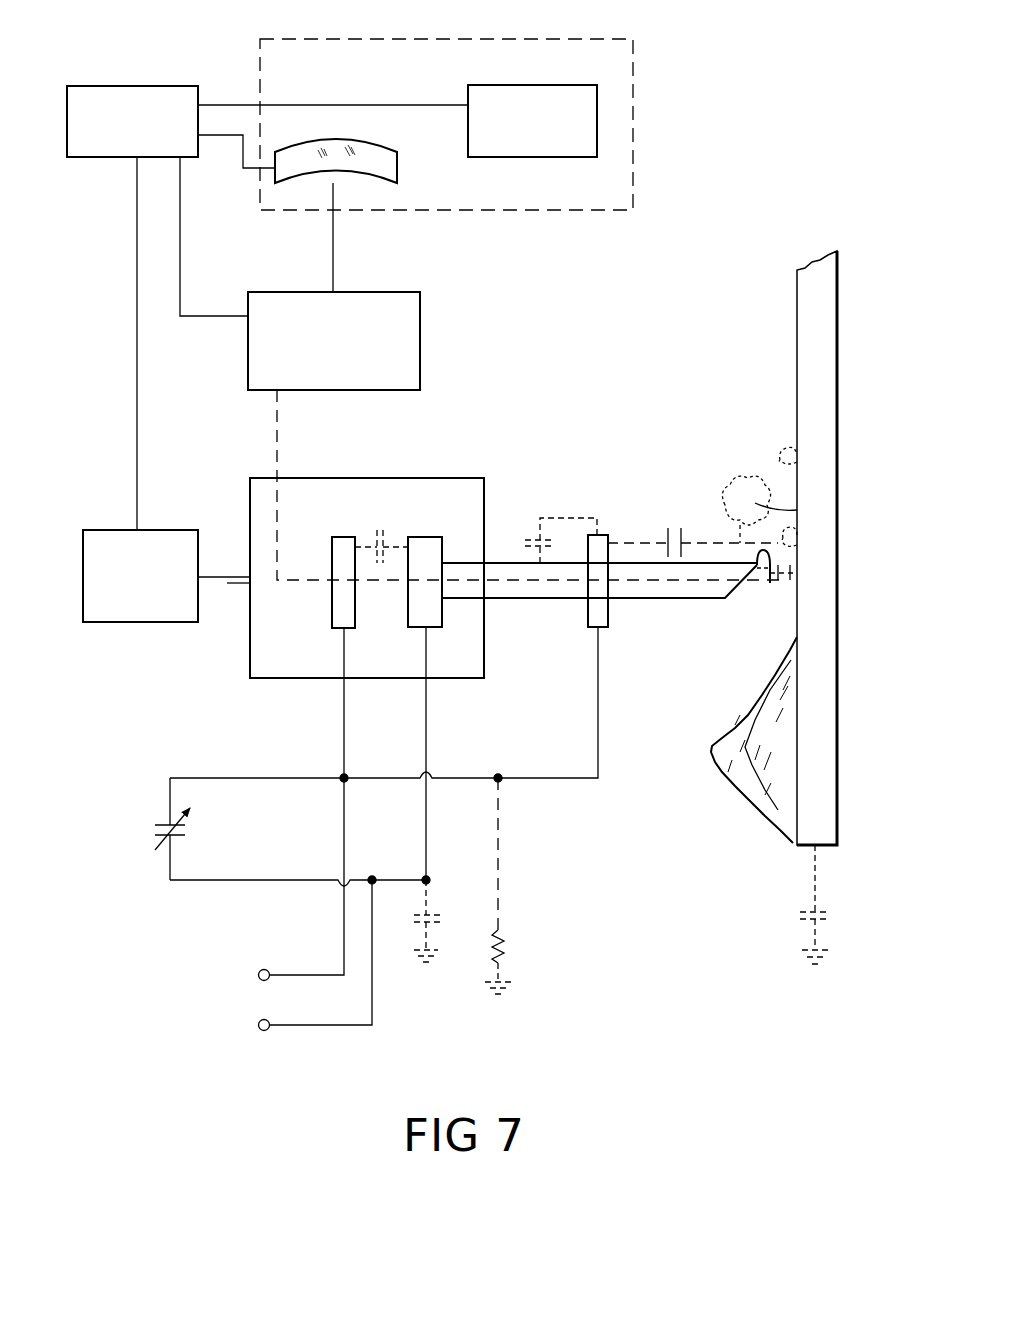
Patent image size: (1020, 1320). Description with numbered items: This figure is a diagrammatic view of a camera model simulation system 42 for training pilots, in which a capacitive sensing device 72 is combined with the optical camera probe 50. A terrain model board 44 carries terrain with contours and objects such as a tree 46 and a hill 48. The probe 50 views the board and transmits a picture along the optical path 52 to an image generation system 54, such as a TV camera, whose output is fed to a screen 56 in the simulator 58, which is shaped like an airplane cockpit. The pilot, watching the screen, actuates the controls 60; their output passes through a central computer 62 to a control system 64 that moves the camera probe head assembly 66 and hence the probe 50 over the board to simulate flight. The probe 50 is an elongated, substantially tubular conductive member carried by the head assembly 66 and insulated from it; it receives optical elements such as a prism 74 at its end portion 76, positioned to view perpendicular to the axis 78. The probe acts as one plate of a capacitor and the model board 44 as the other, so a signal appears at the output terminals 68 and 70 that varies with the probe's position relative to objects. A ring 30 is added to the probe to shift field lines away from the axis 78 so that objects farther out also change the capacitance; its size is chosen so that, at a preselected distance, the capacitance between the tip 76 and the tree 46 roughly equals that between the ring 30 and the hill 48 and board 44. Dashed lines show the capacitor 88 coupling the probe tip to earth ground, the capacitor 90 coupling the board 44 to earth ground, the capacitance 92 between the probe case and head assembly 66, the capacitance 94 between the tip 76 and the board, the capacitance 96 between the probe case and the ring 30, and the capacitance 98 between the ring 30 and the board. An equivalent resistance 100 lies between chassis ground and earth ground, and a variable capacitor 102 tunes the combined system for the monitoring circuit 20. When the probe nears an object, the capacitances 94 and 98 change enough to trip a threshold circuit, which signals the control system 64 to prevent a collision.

The monitoring circuit 20 is at (558, 585).
The ring 30 is at (612, 612).
The simulation system 42 is at (698, 220).
The terrain model board 44 is at (826, 458).
The tree 46 is at (735, 490).
The hill 48 is at (750, 795).
The optical camera probe 50 is at (634, 533).
The optical path 52 is at (278, 434).
The image generation system 54 is at (422, 334).
The screen 56 is at (397, 168).
The simulator 58 is at (510, 40).
The controls 60 is at (540, 85).
The central computer 62 is at (141, 86).
The control system 64 is at (172, 530).
The camera probe head assembly 66 is at (285, 680).
The output terminal 68 is at (258, 1025).
The output terminal 70 is at (258, 974).
The sensing device 72 is at (546, 471).
The prism 74 is at (742, 585).
The end portion 76 is at (762, 580).
The axis 78 is at (240, 583).
The capacitor 88 is at (440, 917).
The capacitor 90 is at (805, 918).
The capacitance 92 is at (385, 530).
The capacitance 94 is at (783, 560).
The capacitance 96 is at (540, 538).
The capacitance 98 is at (719, 530).
The equivalent resistance 100 is at (505, 940).
The variable capacitor 102 is at (180, 830).